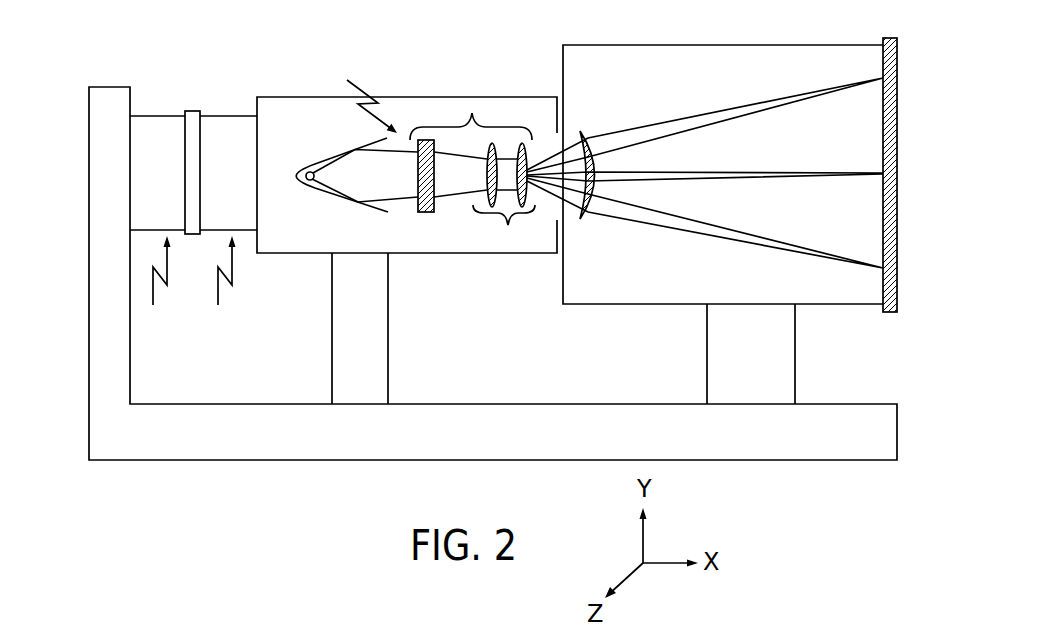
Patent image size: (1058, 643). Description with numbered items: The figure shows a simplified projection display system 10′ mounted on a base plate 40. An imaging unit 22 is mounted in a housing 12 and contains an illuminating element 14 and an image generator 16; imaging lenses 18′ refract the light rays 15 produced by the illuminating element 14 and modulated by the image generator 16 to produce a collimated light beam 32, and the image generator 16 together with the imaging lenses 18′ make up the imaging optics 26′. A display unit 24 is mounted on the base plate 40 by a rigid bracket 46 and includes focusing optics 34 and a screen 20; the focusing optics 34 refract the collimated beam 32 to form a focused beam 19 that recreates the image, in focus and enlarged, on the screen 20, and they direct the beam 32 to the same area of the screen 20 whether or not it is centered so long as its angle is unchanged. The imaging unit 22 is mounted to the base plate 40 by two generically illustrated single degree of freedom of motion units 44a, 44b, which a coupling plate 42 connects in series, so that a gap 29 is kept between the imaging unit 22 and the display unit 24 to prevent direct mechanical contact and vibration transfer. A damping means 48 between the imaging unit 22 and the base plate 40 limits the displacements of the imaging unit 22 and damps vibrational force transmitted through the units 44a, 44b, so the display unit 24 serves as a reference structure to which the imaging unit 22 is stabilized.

The projection display system 10′ is at (405, 63).
The housing 12 is at (278, 253).
The illuminating element 14 is at (323, 193).
The light rays 15 is at (395, 203).
The image generator 16 is at (427, 211).
The imaging lenses 18′ is at (508, 225).
The focused beam 19 is at (680, 222).
The screen 20 is at (882, 310).
The imaging unit 22 is at (356, 97).
The display unit 24 is at (600, 304).
The imaging optics 26′ is at (472, 113).
The gap 29 is at (563, 46).
The collimated light beam 32 is at (556, 150).
The focusing optics 34 is at (588, 218).
The base plate 40 is at (238, 404).
The coupling plate 42 is at (194, 111).
The single degree of freedom of motion unit 44a is at (159, 286).
The single degree of freedom of motion unit 44b is at (221, 286).
The rigid bracket 46 is at (707, 350).
The damping means 48 is at (332, 335).